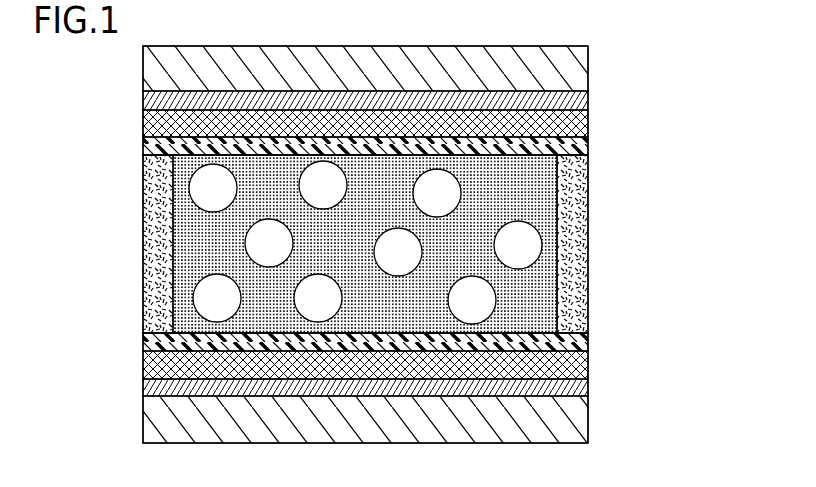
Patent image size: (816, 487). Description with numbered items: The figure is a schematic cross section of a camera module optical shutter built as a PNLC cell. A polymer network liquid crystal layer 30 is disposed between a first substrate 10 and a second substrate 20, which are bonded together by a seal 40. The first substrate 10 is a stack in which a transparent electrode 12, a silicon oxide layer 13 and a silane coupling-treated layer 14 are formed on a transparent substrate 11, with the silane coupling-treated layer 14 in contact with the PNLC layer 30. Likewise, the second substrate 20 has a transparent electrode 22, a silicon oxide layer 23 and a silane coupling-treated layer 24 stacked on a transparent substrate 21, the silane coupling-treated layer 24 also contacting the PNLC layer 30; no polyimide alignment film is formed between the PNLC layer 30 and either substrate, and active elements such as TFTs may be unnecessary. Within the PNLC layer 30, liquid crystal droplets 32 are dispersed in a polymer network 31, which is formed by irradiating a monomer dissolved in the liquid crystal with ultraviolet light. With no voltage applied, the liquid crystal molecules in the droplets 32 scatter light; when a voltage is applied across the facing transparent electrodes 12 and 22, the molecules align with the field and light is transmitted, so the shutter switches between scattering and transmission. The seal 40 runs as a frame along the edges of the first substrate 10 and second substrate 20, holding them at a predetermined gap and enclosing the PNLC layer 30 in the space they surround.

The first substrate 10 is at (79, 47).
The transparent substrate 11 is at (150, 70).
The transparent electrode 12 is at (143, 98).
The silicon oxide layer 13 is at (143, 122).
The silane coupling-treated layer 14 is at (143, 147).
The second substrate 20 is at (79, 333).
The transparent substrate 21 is at (150, 420).
The transparent electrode 22 is at (143, 392).
The silicon oxide layer 23 is at (143, 367).
The silane coupling-treated layer 24 is at (150, 342).
The polymer network liquid crystal layer 30 is at (658, 170).
The polymer network 31 is at (530, 192).
The liquid crystal droplets 32 is at (533, 249).
The seal 40 is at (148, 239).